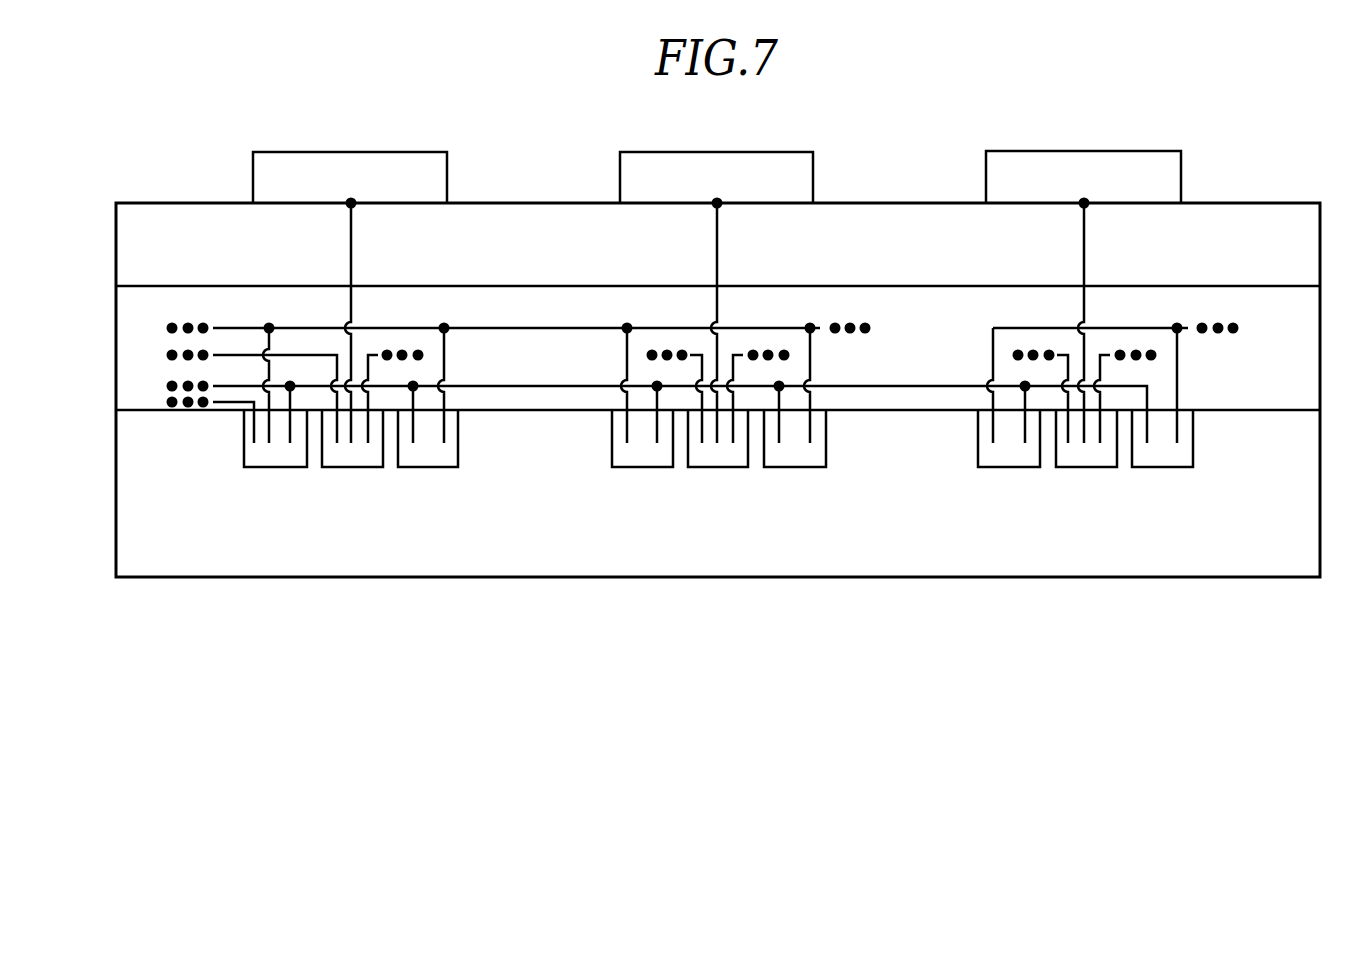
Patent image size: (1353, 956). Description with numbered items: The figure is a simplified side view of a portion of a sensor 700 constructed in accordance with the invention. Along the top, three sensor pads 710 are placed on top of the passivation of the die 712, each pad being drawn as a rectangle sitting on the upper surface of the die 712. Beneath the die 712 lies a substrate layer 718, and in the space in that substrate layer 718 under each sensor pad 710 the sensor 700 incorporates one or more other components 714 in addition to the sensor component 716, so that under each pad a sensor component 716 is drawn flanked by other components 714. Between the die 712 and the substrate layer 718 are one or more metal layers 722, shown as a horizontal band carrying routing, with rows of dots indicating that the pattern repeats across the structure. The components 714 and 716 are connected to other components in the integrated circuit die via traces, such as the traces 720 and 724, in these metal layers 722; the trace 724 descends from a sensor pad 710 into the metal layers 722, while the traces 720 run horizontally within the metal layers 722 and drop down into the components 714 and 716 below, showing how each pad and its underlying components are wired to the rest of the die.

The sensor 700 is at (850, 640).
The sensor pad 710 is at (313, 163).
The die 712 is at (145, 241).
The other component 714 is at (277, 455).
The sensor component 716 is at (355, 455).
The substrate layer 718 is at (135, 508).
The trace 720 is at (225, 386).
The metal layer 722 is at (135, 382).
The trace 724 is at (351, 252).